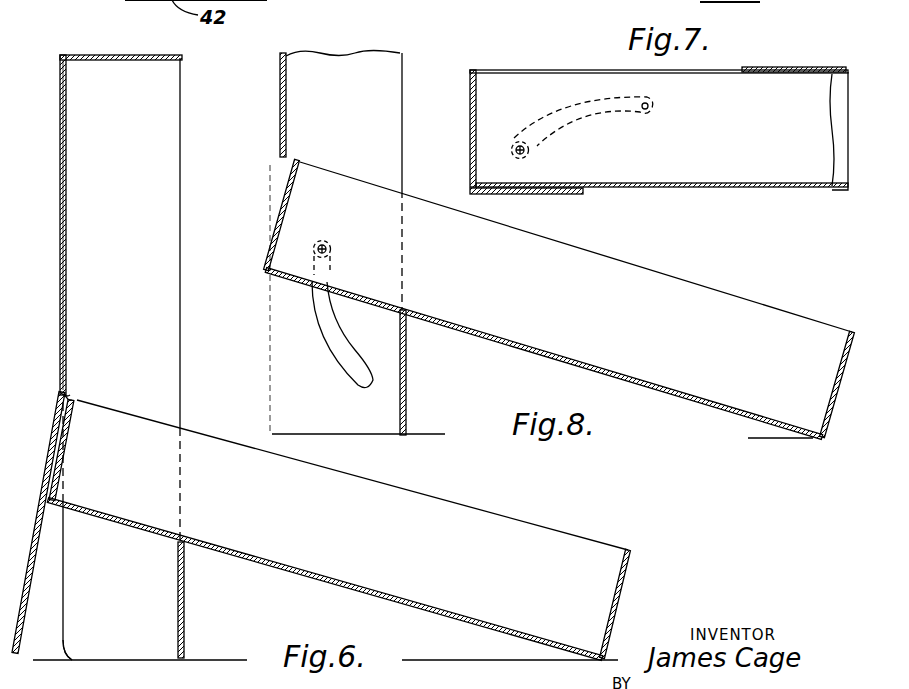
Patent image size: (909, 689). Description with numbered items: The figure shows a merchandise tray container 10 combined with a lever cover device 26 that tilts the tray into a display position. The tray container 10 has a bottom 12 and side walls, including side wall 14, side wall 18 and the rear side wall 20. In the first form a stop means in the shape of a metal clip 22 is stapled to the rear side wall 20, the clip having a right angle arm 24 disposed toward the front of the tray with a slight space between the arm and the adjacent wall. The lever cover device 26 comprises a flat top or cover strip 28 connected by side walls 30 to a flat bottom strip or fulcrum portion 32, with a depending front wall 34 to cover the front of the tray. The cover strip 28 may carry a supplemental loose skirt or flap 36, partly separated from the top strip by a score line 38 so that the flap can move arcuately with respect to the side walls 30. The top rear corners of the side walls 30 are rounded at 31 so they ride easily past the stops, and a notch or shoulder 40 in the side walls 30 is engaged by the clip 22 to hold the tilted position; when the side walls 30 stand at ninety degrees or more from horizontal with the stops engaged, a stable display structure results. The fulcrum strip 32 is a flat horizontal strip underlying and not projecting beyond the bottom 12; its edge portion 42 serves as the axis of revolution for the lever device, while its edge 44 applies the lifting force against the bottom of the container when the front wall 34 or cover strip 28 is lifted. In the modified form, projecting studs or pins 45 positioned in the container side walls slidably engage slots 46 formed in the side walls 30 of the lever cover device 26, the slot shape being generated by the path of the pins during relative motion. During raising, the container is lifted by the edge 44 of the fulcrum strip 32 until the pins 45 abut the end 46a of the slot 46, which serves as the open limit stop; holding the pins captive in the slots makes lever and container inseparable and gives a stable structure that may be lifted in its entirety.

In FIG. 6, the tray container 10 is at (466, 623).
In FIG. 8, the tray container 10 is at (754, 300).
In FIG. 6, the bottom 12 is at (322, 578).
In FIG. 8, the bottom 12 is at (660, 392).
In FIG. 7, the bottom 12 is at (676, 188).
In FIG. 6, the side wall 14 is at (432, 512).
In FIG. 8, the side wall 14 is at (528, 330).
In FIG. 7, the side wall 14 is at (751, 170).
In FIG. 6, the side wall 18 is at (614, 591).
In FIG. 8, the side wall 18 is at (830, 418).
In FIG. 6, the rear side wall 20 is at (66, 473).
In FIG. 8, the rear side wall 20 is at (285, 188).
In FIG. 7, the rear side wall 20 is at (476, 106).
In FIG. 6, the metal clip 22 is at (50, 417).
In FIG. 6, the right angle arm 24 is at (74, 400).
In FIG. 6, the lever cover device 26 is at (53, 216).
In FIG. 8, the lever cover device 26 is at (412, 87).
In FIG. 7, the lever cover device 26 is at (808, 70).
In FIG. 6, the cover strip 28 is at (66, 277).
In FIG. 8, the cover strip 28 is at (280, 93).
In FIG. 8, the side walls 30 is at (364, 60).
In FIG. 7, the side walls 30 is at (838, 186).
In FIG. 6, the rounded top rear corners 31 is at (72, 660).
In FIG. 6, the fulcrum strip 32 is at (184, 605).
In FIG. 8, the fulcrum strip 32 is at (406, 377).
In FIG. 7, the fulcrum strip 32 is at (528, 195).
In FIG. 6, the depending front wall 34 is at (104, 56).
In FIG. 6, the supplemental flap 36 is at (35, 530).
In FIG. 6, the score line 38 is at (62, 392).
In FIG. 6, the notch 40 is at (70, 394).
In FIG. 6, the edge portion 42 is at (181, 660).
In FIG. 8, the edge portion 42 is at (404, 435).
In FIG. 7, the edge portion 42 is at (470, 190).
In FIG. 6, the edge 44 is at (183, 542).
In FIG. 8, the edge 44 is at (404, 312).
In FIG. 7, the edge 44 is at (583, 188).
In FIG. 8, the pins 45 is at (320, 240).
In FIG. 7, the pins 45 is at (529, 150).
In FIG. 8, the slots 46 is at (332, 326).
In FIG. 7, the slots 46 is at (553, 118).
In FIG. 8, the slot end 46a is at (331, 247).
In FIG. 7, the slot end 46a is at (650, 105).